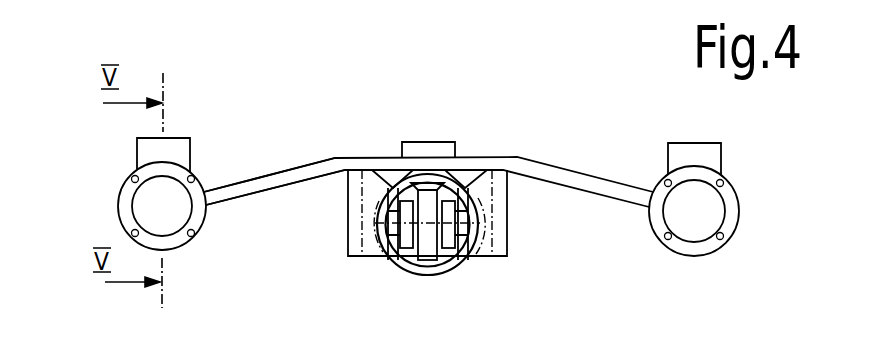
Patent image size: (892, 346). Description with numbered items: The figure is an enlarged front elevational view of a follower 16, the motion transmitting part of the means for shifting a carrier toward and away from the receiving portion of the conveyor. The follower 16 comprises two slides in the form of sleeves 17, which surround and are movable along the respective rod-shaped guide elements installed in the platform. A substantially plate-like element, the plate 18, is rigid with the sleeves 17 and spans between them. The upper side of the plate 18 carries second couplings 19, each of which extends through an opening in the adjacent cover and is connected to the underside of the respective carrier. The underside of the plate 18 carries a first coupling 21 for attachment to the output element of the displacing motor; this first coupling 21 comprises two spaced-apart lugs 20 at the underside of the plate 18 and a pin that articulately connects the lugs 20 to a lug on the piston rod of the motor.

The follower 16 is at (580, 152).
The sleeve 17 is at (198, 222).
The plate 18 is at (260, 182).
The second coupling 19 is at (180, 155).
The lug 20 is at (485, 242).
The first coupling 21 is at (403, 268).